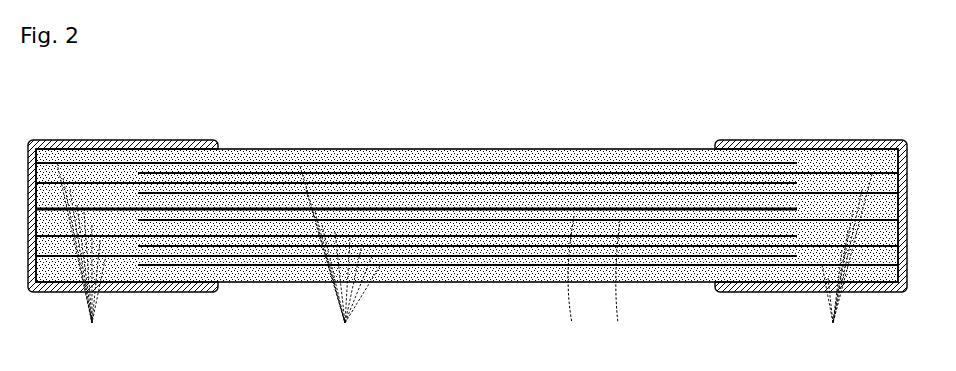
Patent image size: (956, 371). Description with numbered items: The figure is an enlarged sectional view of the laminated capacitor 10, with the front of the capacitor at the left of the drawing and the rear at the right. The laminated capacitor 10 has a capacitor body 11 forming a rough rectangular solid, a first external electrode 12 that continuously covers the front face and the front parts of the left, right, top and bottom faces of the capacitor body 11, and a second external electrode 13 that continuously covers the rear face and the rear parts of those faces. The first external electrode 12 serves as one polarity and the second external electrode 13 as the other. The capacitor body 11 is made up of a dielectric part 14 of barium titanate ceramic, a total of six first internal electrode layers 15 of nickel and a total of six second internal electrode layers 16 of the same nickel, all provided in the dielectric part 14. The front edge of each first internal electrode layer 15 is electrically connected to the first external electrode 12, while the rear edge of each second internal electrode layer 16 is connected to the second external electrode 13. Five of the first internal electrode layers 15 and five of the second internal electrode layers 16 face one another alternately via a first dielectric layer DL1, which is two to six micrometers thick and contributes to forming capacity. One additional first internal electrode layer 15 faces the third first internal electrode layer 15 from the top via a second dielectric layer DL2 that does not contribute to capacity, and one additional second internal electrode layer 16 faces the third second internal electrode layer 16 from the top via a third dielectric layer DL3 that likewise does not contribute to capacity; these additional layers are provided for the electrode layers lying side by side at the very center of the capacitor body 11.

The laminated capacitor 10 is at (300, 149).
The capacitor body 11 is at (433, 149).
The first external electrode 12 is at (86, 140).
The second external electrode 13 is at (845, 140).
The dielectric part 14 is at (512, 149).
The first internal electrode layers 15 is at (81, 257).
The second internal electrode layers 16 is at (847, 263).
The first dielectric layer DL1 is at (340, 259).
The second dielectric layer DL2 is at (572, 284).
The third dielectric layer DL3 is at (619, 286).